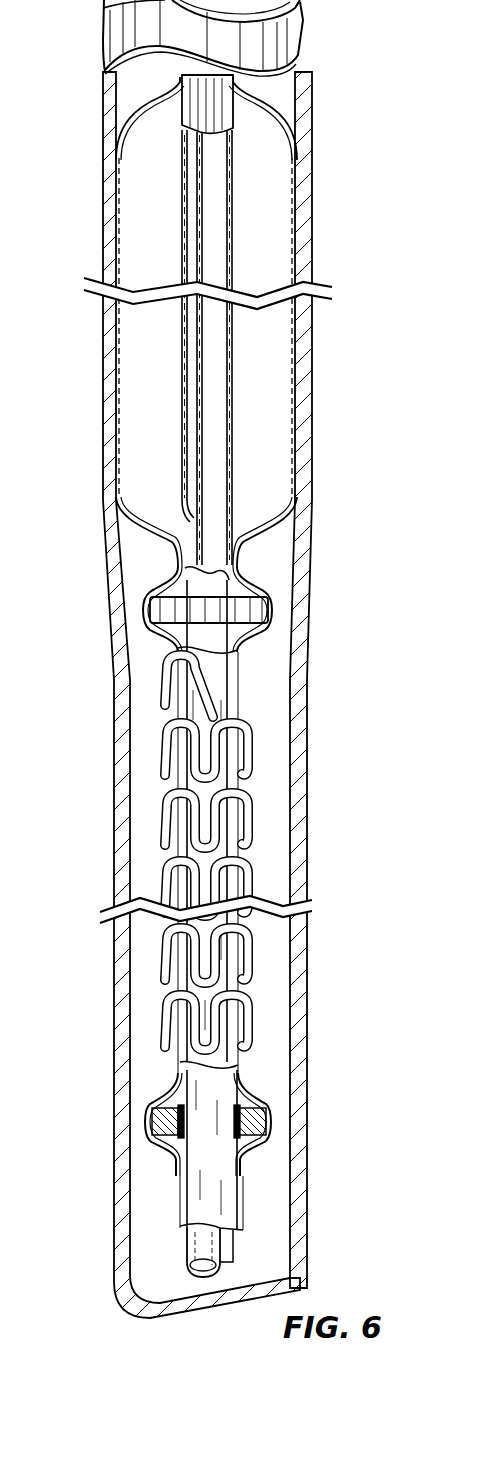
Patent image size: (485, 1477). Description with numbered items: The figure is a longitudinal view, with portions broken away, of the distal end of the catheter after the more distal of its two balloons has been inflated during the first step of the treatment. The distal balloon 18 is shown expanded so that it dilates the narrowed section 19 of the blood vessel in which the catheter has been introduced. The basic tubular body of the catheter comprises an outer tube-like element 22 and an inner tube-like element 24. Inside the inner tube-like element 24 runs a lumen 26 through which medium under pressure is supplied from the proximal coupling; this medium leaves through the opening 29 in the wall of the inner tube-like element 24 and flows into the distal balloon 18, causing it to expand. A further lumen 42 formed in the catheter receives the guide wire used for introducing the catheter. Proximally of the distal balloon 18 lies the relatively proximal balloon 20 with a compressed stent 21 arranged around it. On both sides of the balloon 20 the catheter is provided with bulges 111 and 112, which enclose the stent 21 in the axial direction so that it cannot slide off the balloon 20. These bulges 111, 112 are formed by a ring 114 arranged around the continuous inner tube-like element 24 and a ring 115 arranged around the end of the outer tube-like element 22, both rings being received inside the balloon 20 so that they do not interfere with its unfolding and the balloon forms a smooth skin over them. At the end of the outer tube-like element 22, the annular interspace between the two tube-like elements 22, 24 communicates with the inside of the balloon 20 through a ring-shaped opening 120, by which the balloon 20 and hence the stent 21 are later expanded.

The narrowed section of a blood vessel 19 is at (298, 88).
The lumen 42 is at (225, 262).
The lumen 26 is at (200, 427).
The distal end opening 29 is at (170, 512).
The distal balloon 18 is at (283, 515).
The bulge 111 is at (276, 598).
The ring 114 is at (280, 615).
The proximal balloon 20 is at (230, 700).
The stent 21 is at (250, 832).
The ring 115 is at (150, 1118).
The ring-shaped opening 120 is at (245, 1088).
The bulge 112 is at (272, 1128).
The inner tube-like element 24 is at (225, 1195).
The outer tube-like element 22 is at (200, 1243).